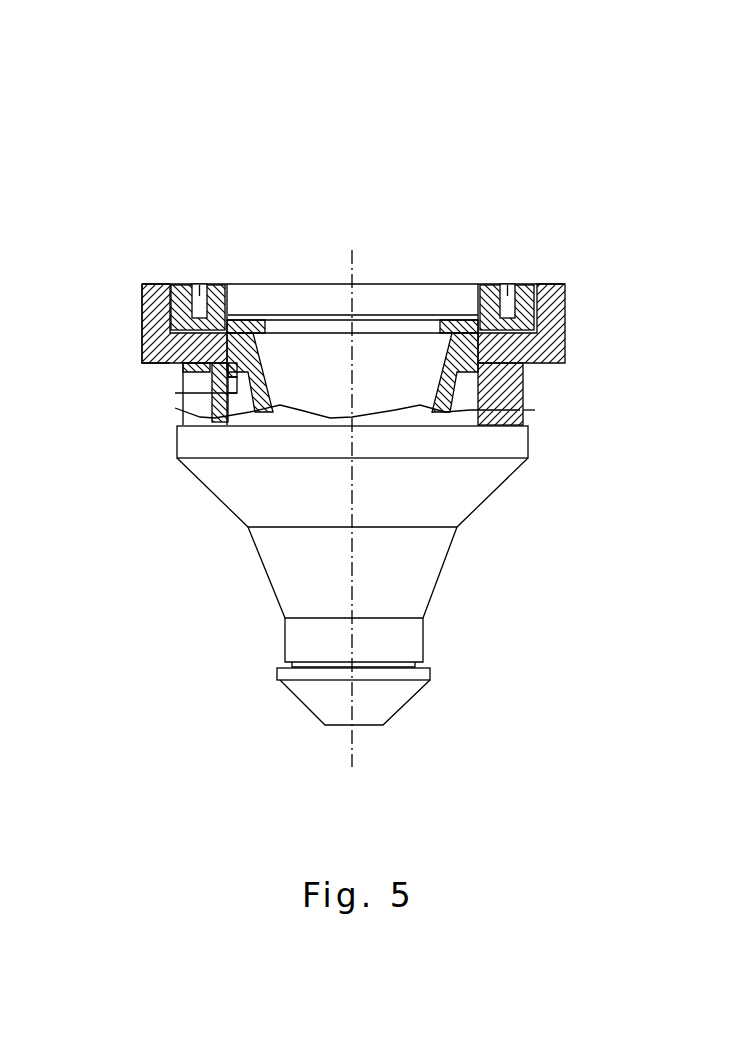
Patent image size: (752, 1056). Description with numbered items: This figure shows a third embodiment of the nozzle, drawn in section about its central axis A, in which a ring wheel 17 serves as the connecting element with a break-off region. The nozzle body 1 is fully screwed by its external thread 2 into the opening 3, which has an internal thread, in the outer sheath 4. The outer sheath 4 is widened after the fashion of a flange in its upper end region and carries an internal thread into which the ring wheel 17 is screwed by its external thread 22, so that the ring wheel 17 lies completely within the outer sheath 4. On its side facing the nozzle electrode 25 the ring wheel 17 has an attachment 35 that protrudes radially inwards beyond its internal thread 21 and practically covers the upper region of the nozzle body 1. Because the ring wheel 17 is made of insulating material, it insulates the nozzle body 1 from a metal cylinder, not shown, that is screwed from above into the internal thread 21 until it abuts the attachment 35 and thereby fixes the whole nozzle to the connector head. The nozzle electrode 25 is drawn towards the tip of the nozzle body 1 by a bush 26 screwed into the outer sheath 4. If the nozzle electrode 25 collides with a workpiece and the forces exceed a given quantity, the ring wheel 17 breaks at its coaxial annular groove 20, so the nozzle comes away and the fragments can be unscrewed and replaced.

The nozzle body 1 is at (258, 398).
The external thread 2 is at (485, 358).
The opening 3 is at (460, 398).
The outer sheath 4 is at (458, 477).
The ring wheel 17 is at (527, 285).
The annular groove 20 is at (200, 285).
The internal thread 21 is at (230, 285).
The external thread 22 is at (172, 285).
The nozzle electrode 25 is at (383, 700).
The bush 26 is at (407, 573).
The attachment 35 is at (247, 320).
The nozzle axis A is at (352, 759).